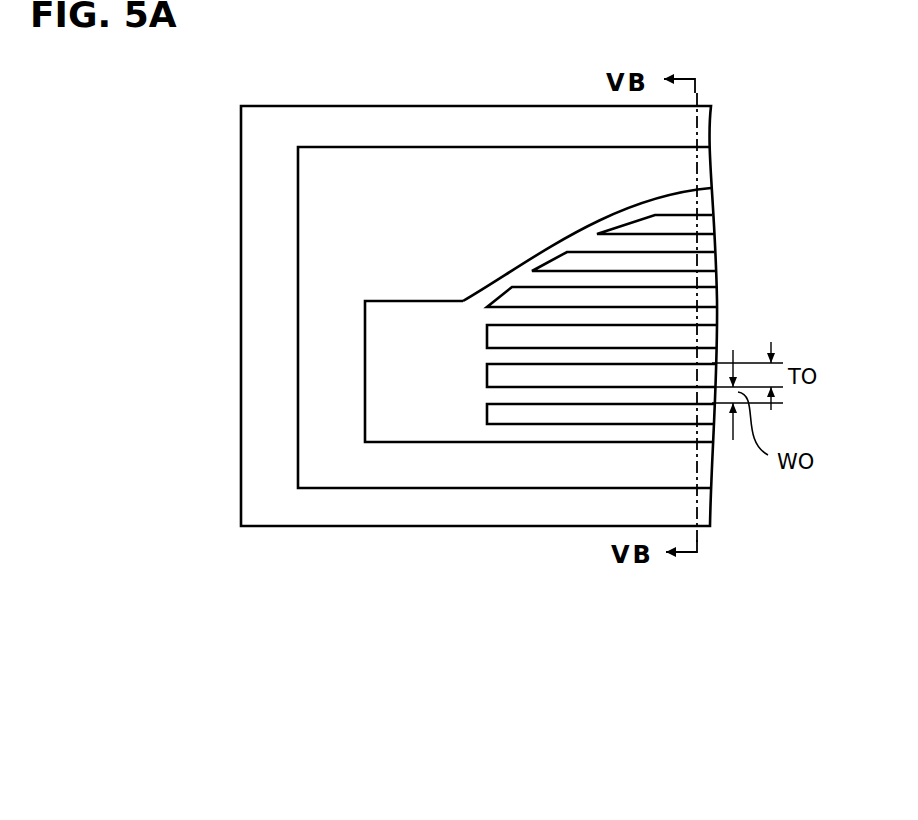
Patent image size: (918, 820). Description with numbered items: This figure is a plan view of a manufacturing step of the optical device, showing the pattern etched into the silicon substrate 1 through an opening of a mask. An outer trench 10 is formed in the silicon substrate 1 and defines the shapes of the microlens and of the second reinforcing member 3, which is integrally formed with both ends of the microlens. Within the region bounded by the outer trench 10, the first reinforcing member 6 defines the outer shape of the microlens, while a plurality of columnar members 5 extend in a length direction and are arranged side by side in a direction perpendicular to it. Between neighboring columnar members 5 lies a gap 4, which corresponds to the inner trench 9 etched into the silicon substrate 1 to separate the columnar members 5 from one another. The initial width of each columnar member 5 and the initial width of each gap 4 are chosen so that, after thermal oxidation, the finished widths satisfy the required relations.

The silicon substrate 1 is at (240, 168).
The outer trench 10 is at (405, 177).
The second reinforcing member 3 is at (405, 408).
The first reinforcing member 6 is at (533, 258).
The inner trench 9 is at (582, 263).
The gap 4 is at (602, 180).
The columnar member 5 is at (553, 393).